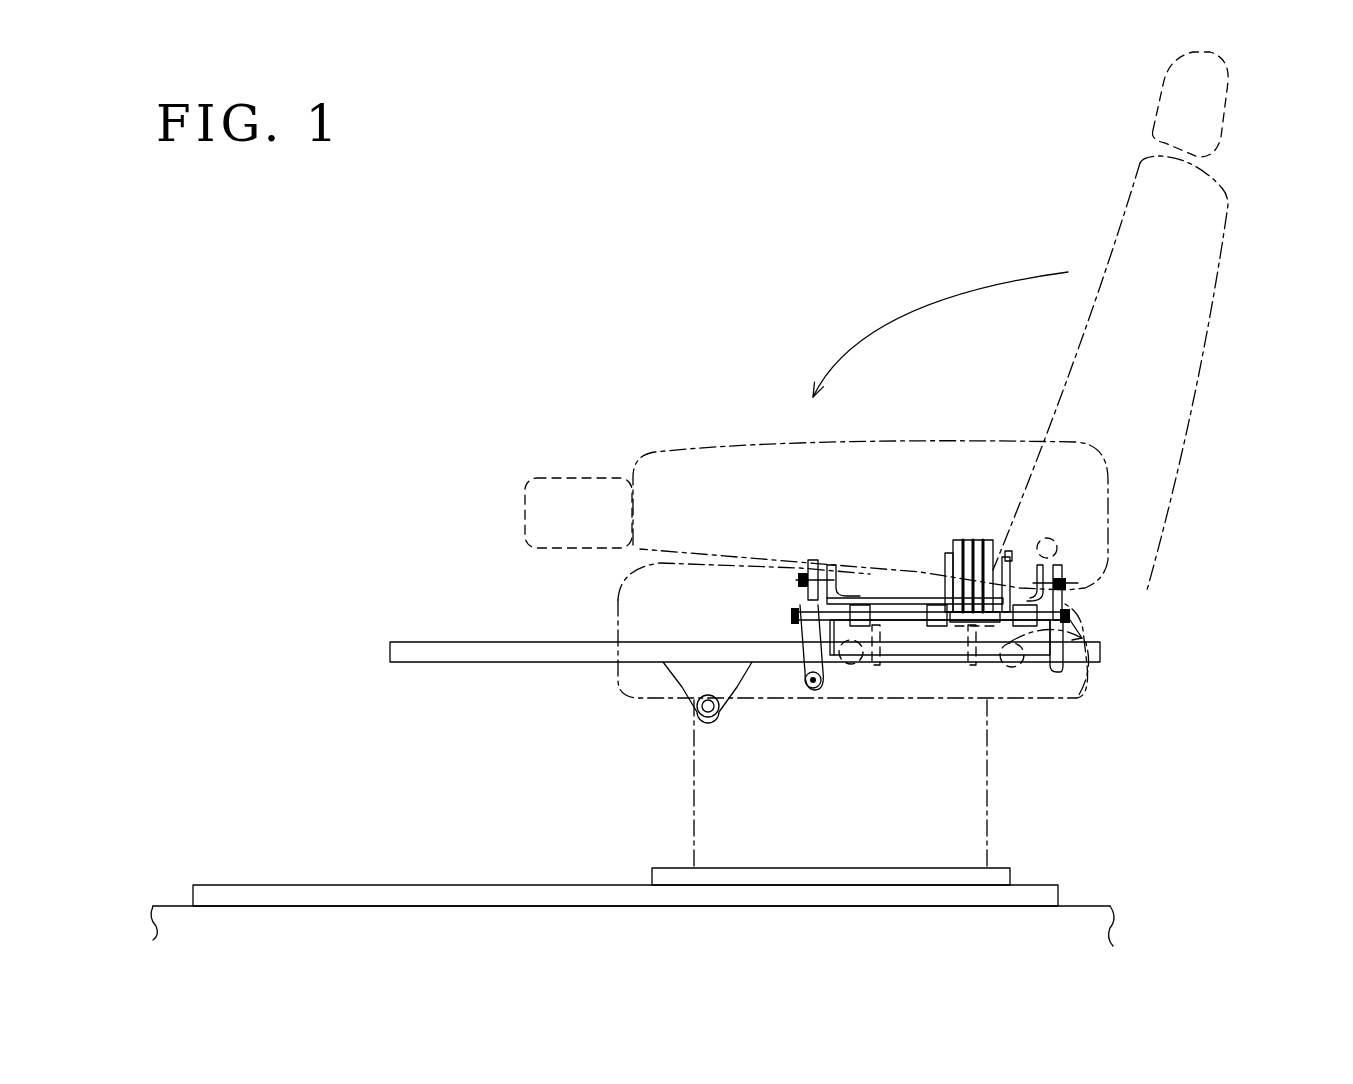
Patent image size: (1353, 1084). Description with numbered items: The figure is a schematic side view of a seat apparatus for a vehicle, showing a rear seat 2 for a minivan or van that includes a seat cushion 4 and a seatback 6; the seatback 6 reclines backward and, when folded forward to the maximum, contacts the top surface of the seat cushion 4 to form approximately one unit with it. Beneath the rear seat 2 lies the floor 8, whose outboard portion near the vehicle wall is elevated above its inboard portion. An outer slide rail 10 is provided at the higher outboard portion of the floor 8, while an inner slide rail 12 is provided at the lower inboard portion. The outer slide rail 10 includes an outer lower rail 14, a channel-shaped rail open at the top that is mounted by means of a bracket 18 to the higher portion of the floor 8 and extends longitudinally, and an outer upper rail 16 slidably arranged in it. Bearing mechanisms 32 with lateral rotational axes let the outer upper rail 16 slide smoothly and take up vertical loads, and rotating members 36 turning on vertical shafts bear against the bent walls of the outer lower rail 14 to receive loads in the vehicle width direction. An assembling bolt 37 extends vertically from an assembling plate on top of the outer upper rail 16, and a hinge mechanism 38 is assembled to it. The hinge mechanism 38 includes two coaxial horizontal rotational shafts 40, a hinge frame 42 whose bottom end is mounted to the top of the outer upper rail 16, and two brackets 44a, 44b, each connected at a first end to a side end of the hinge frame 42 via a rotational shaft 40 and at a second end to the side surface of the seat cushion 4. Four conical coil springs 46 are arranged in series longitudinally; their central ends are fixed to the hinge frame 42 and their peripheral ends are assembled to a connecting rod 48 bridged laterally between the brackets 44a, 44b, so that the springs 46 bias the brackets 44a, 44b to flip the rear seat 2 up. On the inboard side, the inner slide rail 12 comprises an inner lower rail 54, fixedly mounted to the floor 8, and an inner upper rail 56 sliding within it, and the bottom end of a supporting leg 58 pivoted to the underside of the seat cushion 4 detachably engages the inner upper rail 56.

The rear seat 2 is at (522, 283).
The seat cushion 4 is at (1062, 700).
The seatback 6 is at (1205, 380).
The floor 8 is at (178, 906).
The outer slide rail 10 is at (398, 612).
The inner slide rail 12 is at (250, 855).
The outer lower rail 14 is at (430, 662).
The outer upper rail 16 is at (915, 648).
The bracket 18 is at (658, 700).
The bearing mechanism 32 is at (852, 668).
The rotating member 36 is at (876, 668).
The assembling bolt 37 is at (862, 604).
The hinge mechanism 38 is at (1107, 597).
The rotational shaft 40 is at (808, 585).
The hinge frame 42 is at (898, 597).
The bracket 44a is at (790, 675).
The bracket 44b is at (1085, 628).
The conical coil spring 46 is at (948, 540).
The connecting rod 48 is at (795, 617).
The inner lower rail 54 is at (417, 888).
The inner upper rail 56 is at (652, 868).
The supporting leg 58 is at (987, 785).